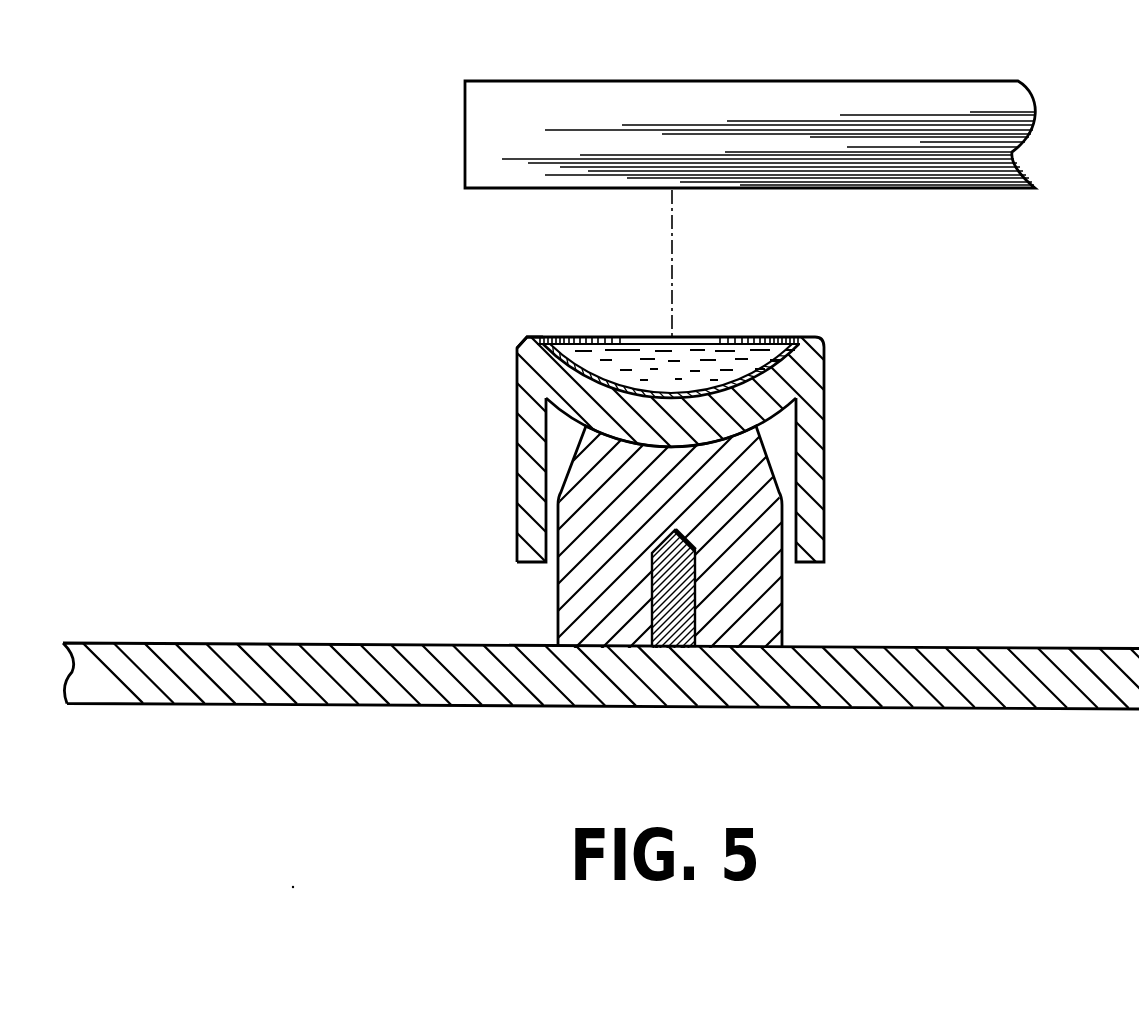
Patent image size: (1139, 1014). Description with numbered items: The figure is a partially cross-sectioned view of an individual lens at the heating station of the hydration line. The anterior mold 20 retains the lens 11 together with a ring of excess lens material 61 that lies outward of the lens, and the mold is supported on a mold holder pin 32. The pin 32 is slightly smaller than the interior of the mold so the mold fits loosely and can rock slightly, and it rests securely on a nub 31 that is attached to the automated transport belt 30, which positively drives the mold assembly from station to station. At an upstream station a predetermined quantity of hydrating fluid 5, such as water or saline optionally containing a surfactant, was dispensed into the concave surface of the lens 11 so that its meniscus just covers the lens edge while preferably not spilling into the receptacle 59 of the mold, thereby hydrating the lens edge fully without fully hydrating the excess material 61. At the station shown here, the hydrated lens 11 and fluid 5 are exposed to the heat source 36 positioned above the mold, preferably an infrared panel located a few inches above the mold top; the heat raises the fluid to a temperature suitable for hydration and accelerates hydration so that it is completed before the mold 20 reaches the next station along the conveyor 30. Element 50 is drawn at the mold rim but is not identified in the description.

The hydrating fluid 5 is at (596, 358).
The lens 11 is at (742, 373).
The anterior mold 20 is at (825, 427).
The transport belt 30 is at (952, 647).
The nub 31 is at (652, 621).
The mold holder pin 32 is at (557, 600).
The heat source 36 is at (828, 81).
The film sheet 50 is at (534, 337).
The receptacle 59 is at (532, 343).
The ring of excess lens material 61 is at (792, 338).